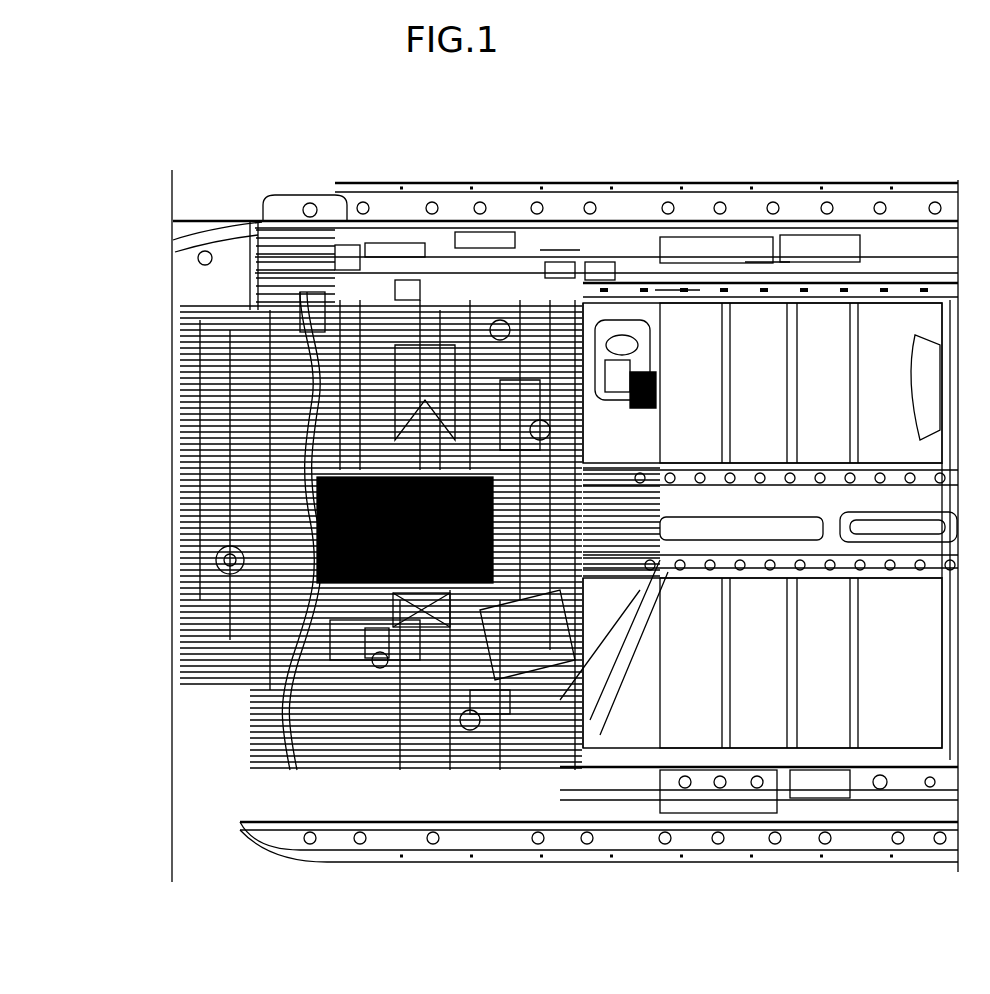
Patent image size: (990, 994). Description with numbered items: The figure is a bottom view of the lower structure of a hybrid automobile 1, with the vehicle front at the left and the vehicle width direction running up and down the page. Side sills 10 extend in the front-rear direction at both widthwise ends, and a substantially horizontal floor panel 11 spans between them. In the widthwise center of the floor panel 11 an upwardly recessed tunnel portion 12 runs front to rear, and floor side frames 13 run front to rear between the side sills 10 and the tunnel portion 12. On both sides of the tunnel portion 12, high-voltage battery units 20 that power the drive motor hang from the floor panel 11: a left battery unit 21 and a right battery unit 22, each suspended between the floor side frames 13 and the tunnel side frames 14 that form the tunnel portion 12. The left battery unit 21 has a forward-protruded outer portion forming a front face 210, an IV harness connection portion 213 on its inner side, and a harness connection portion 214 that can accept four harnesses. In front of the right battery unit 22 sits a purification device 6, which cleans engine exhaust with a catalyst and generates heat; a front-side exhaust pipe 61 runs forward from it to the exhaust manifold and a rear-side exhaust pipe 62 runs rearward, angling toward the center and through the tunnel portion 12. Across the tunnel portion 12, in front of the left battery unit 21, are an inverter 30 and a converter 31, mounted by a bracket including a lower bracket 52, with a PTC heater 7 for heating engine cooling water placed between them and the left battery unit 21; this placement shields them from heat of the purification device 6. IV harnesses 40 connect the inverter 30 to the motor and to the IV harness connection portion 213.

The hybrid automobile 1 is at (136, 248).
The purification device 6 is at (529, 667).
The PTC heater 7 is at (500, 327).
The side sill 10 is at (860, 215).
The floor panel 11 is at (565, 767).
The tunnel portion 12 is at (813, 580).
The floor side frame 13 is at (595, 273).
The tunnel side frame 14 is at (312, 300).
The high-voltage battery unit 20 is at (762, 525).
The left battery unit 21 is at (762, 383).
The right battery unit 22 is at (751, 654).
The inverter 30 is at (348, 252).
The converter 31 is at (408, 287).
The IV harness 40 is at (645, 393).
The lower bracket 52 is at (660, 403).
The front-side exhaust pipe 61 is at (407, 667).
The rear-side exhaust pipe 62 is at (680, 753).
The front face 210 is at (558, 273).
The IV harness connection portion 213 is at (762, 268).
The harness connection portion 214 is at (560, 253).